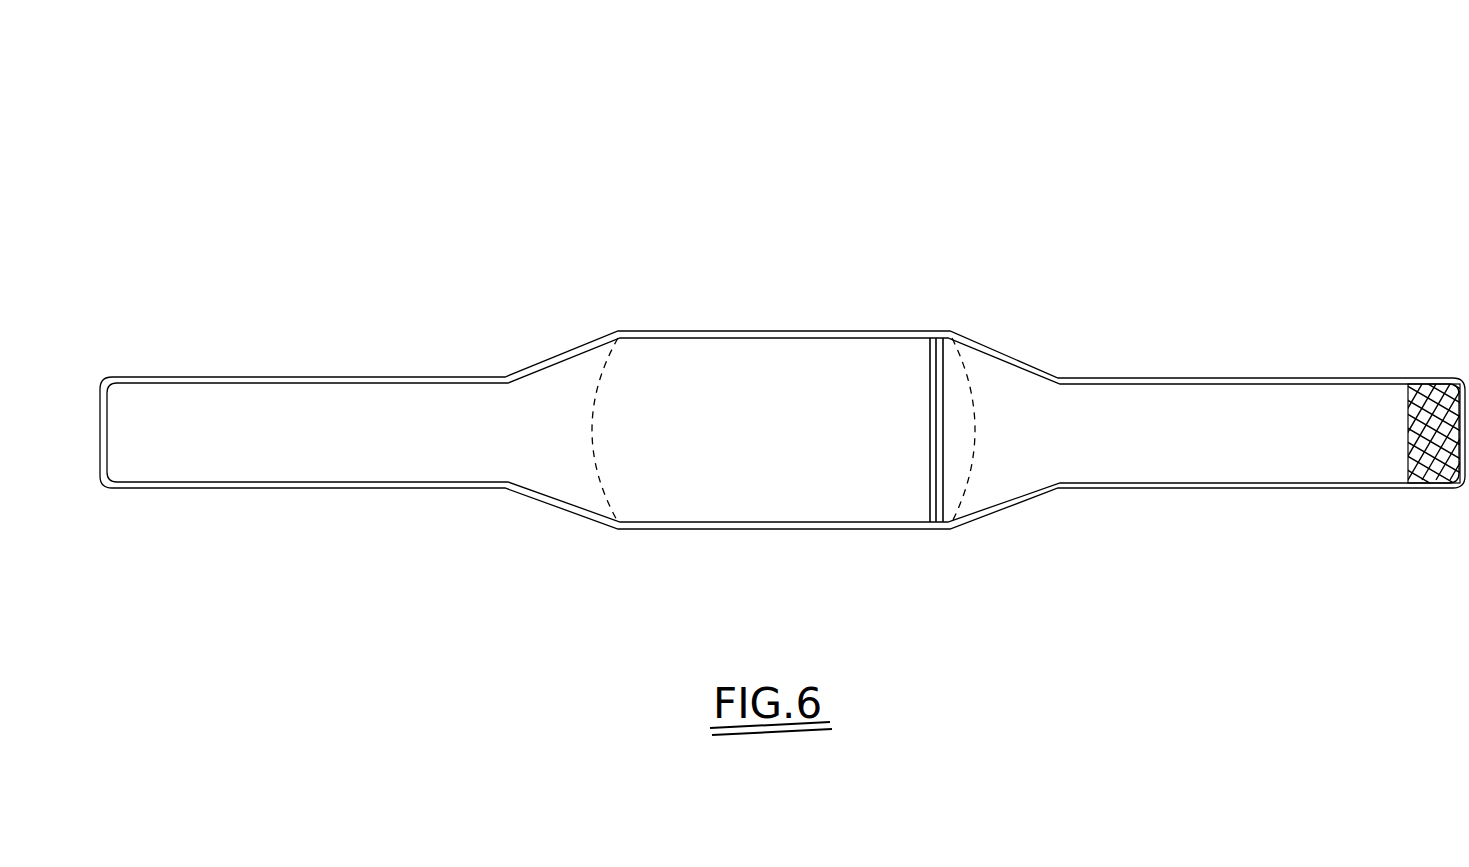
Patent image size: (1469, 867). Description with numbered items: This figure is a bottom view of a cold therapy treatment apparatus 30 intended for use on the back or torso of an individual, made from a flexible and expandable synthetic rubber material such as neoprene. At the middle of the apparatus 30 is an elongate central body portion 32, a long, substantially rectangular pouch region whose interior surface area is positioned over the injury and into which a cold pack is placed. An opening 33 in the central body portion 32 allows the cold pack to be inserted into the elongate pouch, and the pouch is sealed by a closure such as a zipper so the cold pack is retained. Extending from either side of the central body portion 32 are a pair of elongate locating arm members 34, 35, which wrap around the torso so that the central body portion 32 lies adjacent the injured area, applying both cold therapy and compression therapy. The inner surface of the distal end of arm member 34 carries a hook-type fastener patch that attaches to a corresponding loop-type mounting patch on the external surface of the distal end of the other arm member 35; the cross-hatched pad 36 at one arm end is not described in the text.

The cold therapy treatment apparatus 30 is at (784, 283).
The central body portion 32 is at (770, 445).
The opening 33 is at (928, 383).
The locating arm member 34 is at (1193, 378).
The locating arm member 35 is at (292, 377).
The fastener pad 36 is at (1413, 383).